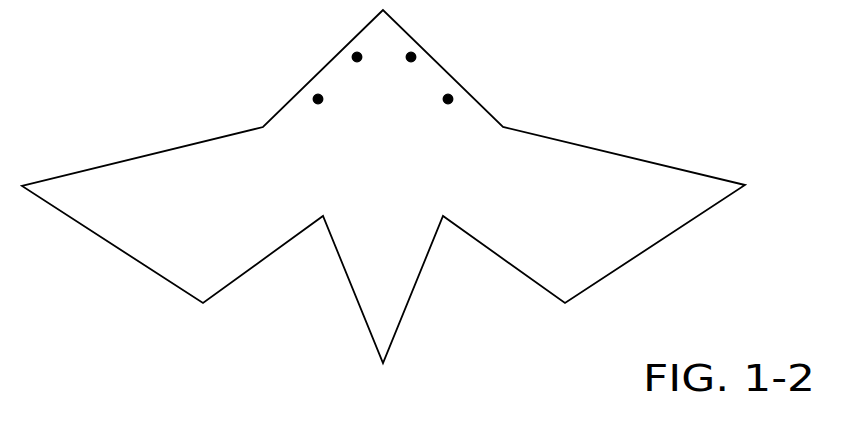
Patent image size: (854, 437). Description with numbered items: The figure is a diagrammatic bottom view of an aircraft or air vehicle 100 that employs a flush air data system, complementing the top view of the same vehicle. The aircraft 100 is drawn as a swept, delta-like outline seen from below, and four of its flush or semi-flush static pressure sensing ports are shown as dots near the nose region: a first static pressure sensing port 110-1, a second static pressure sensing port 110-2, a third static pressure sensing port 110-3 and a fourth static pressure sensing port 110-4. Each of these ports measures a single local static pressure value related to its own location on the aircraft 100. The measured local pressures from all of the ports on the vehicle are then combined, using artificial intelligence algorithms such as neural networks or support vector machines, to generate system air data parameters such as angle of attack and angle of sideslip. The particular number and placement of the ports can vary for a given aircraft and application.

The aircraft 100 is at (587, 147).
The static pressure sensing port 110-1 is at (318, 99).
The static pressure sensing port 110-2 is at (357, 57).
The static pressure sensing port 110-3 is at (411, 57).
The static pressure sensing port 110-4 is at (448, 99).